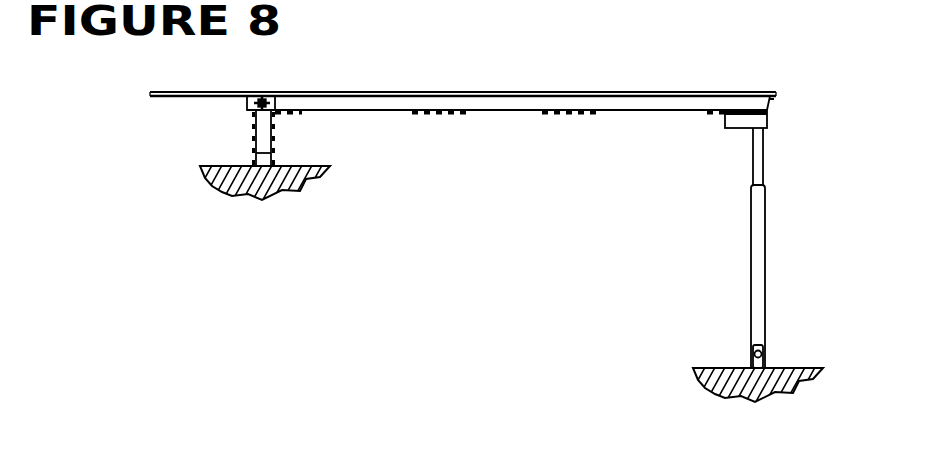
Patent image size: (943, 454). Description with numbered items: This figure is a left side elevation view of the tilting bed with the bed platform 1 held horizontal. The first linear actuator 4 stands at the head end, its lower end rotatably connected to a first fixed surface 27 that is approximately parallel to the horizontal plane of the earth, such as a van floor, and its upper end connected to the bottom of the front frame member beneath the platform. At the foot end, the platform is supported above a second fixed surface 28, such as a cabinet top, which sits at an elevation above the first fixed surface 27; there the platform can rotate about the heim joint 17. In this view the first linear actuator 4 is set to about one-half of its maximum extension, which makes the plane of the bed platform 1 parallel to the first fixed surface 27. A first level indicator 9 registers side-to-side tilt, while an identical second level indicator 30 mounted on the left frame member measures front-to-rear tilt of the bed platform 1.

The bed platform 1 is at (725, 97).
The first level indicator 9 is at (770, 99).
The heim joint 17 is at (267, 101).
The second fixed surface 28 is at (232, 166).
The second level indicator 30 is at (741, 118).
The first linear actuator 4 is at (759, 290).
The first fixed surface 27 is at (725, 368).